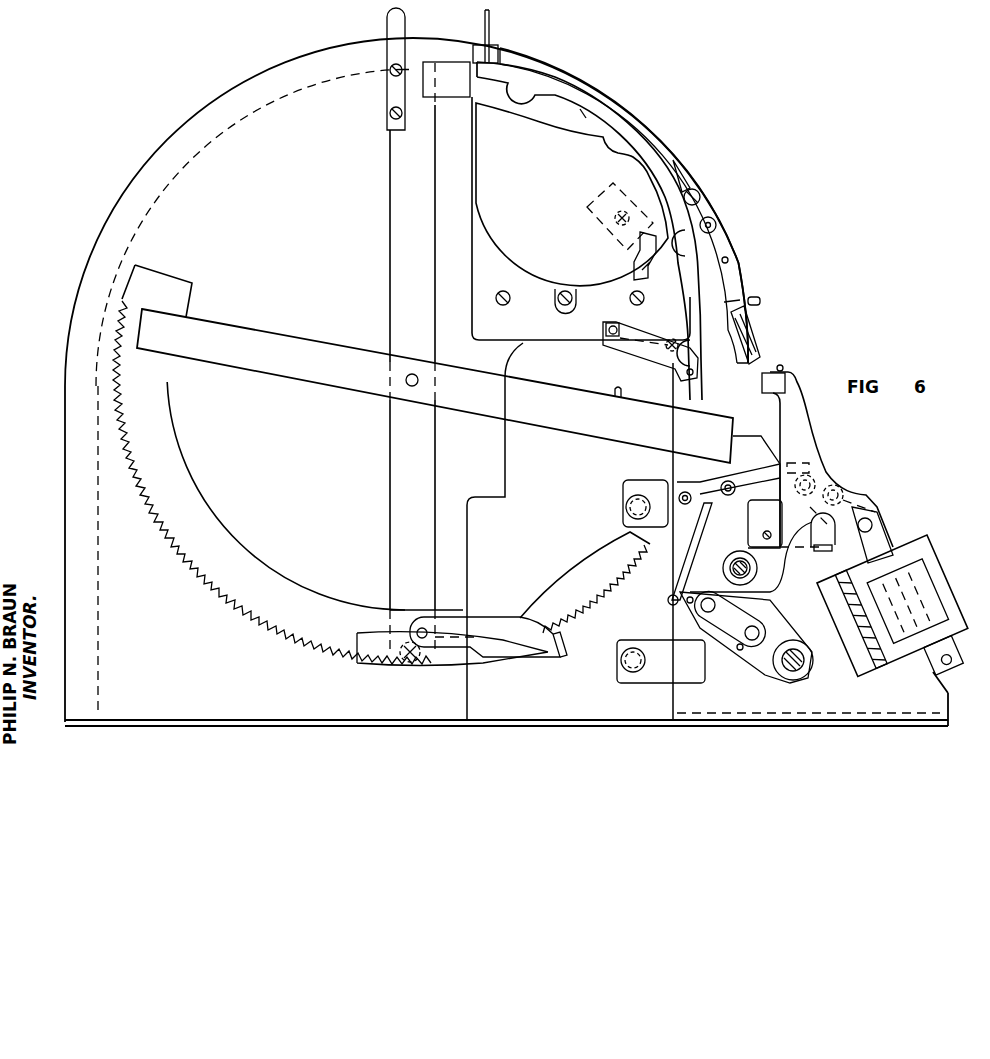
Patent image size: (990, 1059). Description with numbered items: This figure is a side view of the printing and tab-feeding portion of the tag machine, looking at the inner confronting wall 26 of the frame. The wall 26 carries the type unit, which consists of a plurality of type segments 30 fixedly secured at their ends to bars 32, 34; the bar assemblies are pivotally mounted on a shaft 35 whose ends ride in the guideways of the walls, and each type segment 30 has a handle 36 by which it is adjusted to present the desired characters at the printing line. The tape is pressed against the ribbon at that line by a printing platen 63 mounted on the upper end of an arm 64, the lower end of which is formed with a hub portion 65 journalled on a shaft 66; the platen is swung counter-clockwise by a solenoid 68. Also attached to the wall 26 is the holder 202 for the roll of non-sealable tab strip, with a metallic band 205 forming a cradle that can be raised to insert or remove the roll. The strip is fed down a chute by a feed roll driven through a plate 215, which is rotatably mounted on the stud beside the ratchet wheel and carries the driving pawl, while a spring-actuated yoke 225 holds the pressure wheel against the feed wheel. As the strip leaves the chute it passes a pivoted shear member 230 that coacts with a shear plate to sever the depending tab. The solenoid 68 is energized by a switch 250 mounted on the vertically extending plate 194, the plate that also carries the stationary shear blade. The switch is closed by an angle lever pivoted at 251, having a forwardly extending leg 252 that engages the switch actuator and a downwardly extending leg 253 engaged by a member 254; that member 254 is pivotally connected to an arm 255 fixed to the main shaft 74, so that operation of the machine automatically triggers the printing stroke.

The inner confronting wall 26 is at (506, 382).
The type segment 30 is at (512, 100).
The bar 32 is at (395, 233).
The bar 34 is at (568, 373).
The shaft 35 is at (412, 374).
The handle 36 is at (388, 18).
The printing platen 63 is at (780, 368).
The arm 64 is at (808, 425).
The hub portion 65 is at (735, 555).
The shaft 66 is at (729, 574).
The solenoid 68 is at (927, 574).
The main shaft 74 is at (789, 669).
The vertically extending plate 194 is at (808, 699).
The holder 202 is at (578, 408).
The metallic band 205 is at (490, 43).
The plate 215 is at (657, 269).
The yoke 225 is at (725, 256).
The shear member 230 is at (746, 331).
The switch 250 is at (758, 532).
The pivot of angle lever 251 is at (683, 494).
The forwardly extending leg 252 is at (777, 466).
The downwardly extending leg 253 is at (681, 578).
The member 254 is at (737, 620).
The arm 255 is at (778, 636).